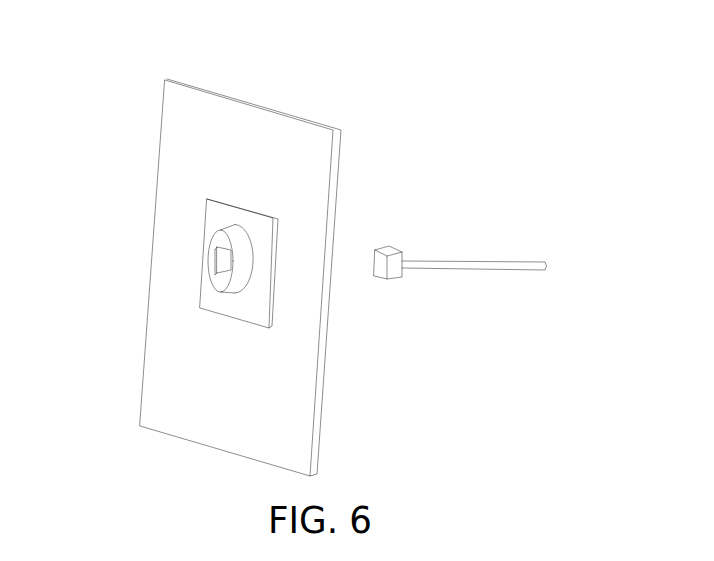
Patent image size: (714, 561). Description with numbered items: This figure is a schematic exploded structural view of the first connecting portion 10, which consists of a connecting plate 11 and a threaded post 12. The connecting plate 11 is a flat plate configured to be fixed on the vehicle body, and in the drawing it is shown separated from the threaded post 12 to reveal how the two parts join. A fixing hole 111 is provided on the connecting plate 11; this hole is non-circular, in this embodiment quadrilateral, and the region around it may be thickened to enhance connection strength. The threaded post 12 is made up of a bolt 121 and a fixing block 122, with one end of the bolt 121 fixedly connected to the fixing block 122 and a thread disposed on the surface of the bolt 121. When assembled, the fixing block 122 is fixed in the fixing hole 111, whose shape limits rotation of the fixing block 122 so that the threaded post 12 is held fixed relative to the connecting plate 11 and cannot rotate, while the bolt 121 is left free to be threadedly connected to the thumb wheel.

The first connecting portion 10 is at (303, 53).
The connecting plate 11 is at (187, 185).
The fixing hole 111 is at (225, 263).
The threaded post 12 is at (533, 170).
The bolt 121 is at (437, 267).
The fixing block 122 is at (393, 256).